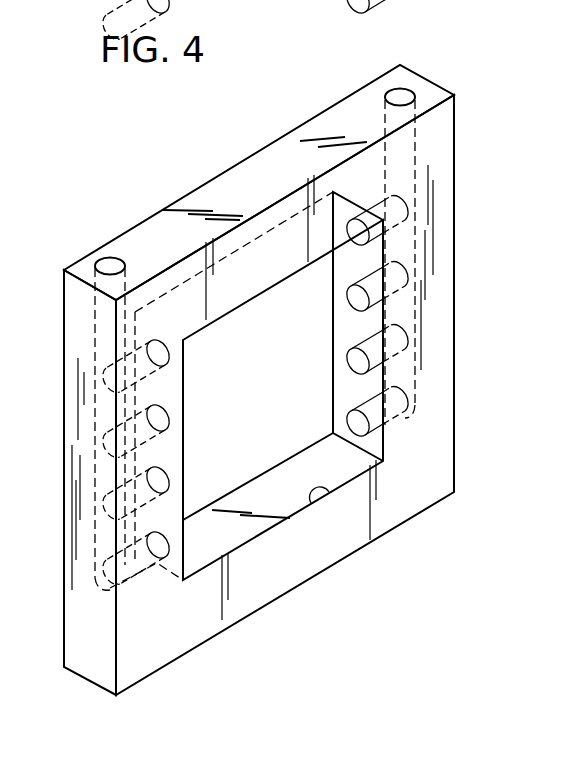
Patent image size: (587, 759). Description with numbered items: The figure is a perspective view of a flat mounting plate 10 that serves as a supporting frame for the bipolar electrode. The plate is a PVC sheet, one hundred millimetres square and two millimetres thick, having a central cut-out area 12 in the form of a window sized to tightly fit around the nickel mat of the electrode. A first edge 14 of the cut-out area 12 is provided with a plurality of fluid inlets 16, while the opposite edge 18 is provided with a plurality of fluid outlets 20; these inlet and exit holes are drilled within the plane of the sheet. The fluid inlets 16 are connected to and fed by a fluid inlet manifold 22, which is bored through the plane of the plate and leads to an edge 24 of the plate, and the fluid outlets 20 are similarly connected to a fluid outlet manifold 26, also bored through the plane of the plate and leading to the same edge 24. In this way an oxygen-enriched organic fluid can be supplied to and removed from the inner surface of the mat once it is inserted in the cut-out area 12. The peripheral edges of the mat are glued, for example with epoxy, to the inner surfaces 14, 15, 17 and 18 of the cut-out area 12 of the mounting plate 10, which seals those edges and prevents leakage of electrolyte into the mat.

The mounting plate 10 is at (468, 321).
The central cut-out area 12 is at (281, 425).
The first edge 14 is at (184, 470).
The inner surface of cut-out area 15 is at (270, 290).
The fluid inlets 16 is at (185, 407).
The inner surface of cut-out area 17 is at (328, 498).
The opposite edge 18 is at (382, 443).
The fluid outlets 20 is at (352, 369).
The fluid inlet manifold 22 is at (103, 260).
The edge of plate 24 is at (234, 171).
The fluid outlet manifold 26 is at (407, 95).